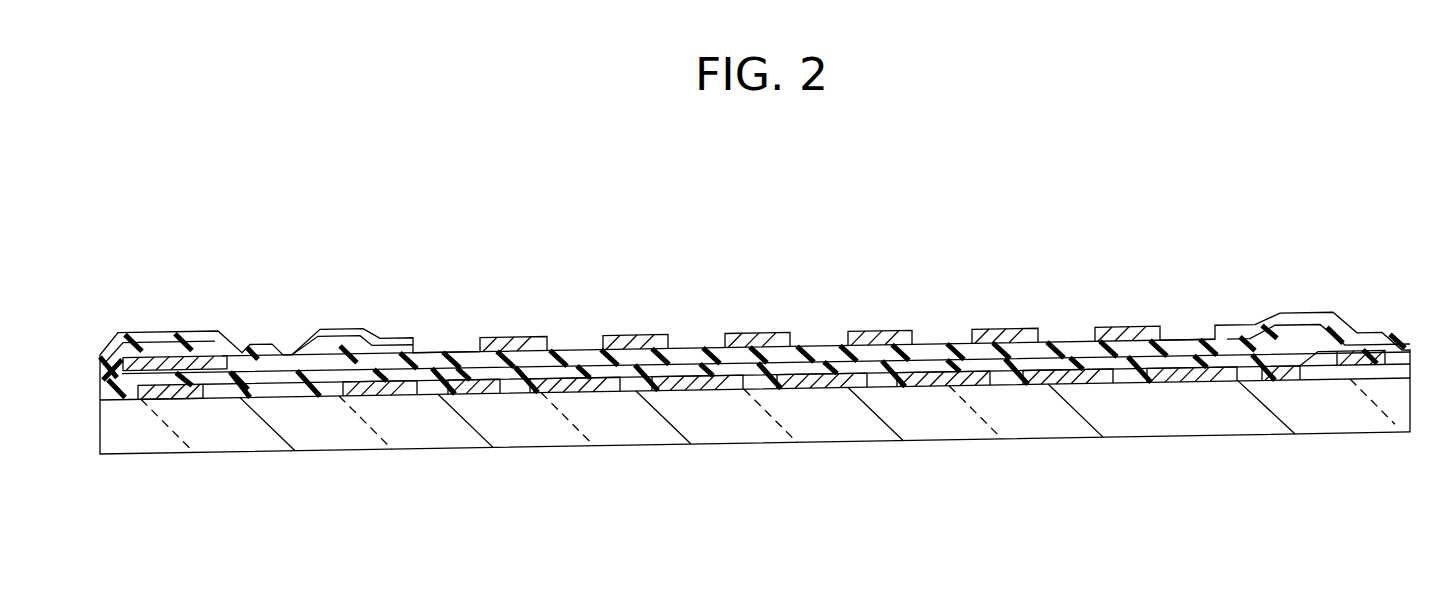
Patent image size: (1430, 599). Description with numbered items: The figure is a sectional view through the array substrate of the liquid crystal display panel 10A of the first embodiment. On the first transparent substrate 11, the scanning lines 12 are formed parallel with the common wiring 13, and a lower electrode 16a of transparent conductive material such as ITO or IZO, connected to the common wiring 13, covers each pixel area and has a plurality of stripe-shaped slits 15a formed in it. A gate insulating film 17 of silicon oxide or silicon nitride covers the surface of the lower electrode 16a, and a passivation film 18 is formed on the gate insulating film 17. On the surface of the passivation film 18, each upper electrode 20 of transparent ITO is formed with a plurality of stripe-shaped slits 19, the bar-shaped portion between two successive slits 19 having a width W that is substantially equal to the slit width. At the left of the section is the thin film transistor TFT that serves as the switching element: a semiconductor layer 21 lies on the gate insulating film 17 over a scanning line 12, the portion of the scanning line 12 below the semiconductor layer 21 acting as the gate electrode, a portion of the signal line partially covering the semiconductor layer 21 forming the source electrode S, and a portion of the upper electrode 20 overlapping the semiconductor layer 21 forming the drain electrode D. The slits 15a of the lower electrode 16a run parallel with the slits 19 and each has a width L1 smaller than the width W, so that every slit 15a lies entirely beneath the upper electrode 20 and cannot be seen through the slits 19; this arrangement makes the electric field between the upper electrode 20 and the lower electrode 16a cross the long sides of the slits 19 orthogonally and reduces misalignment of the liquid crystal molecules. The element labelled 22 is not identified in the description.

The liquid crystal display panel 10A is at (640, 136).
The first transparent substrate 11 is at (1117, 425).
The scanning lines 12 is at (176, 387).
The common wiring 13 is at (1327, 372).
The stripe-shaped slits 15a is at (641, 393).
The lower electrode 16a is at (845, 388).
The gate insulating film 17 is at (427, 373).
The passivation film 18 is at (1055, 332).
The stripe-shaped slits 19 is at (575, 340).
The upper electrode 20 is at (890, 332).
The semiconductor layer 21 is at (167, 357).
The protective layer 22 is at (297, 350).
The source electrode S is at (123, 380).
The drain electrode D is at (263, 378).
The thin film transistor TFT is at (303, 532).
The width of bar-shaped portion W is at (790, 267).
The width of slit L1 is at (745, 395).